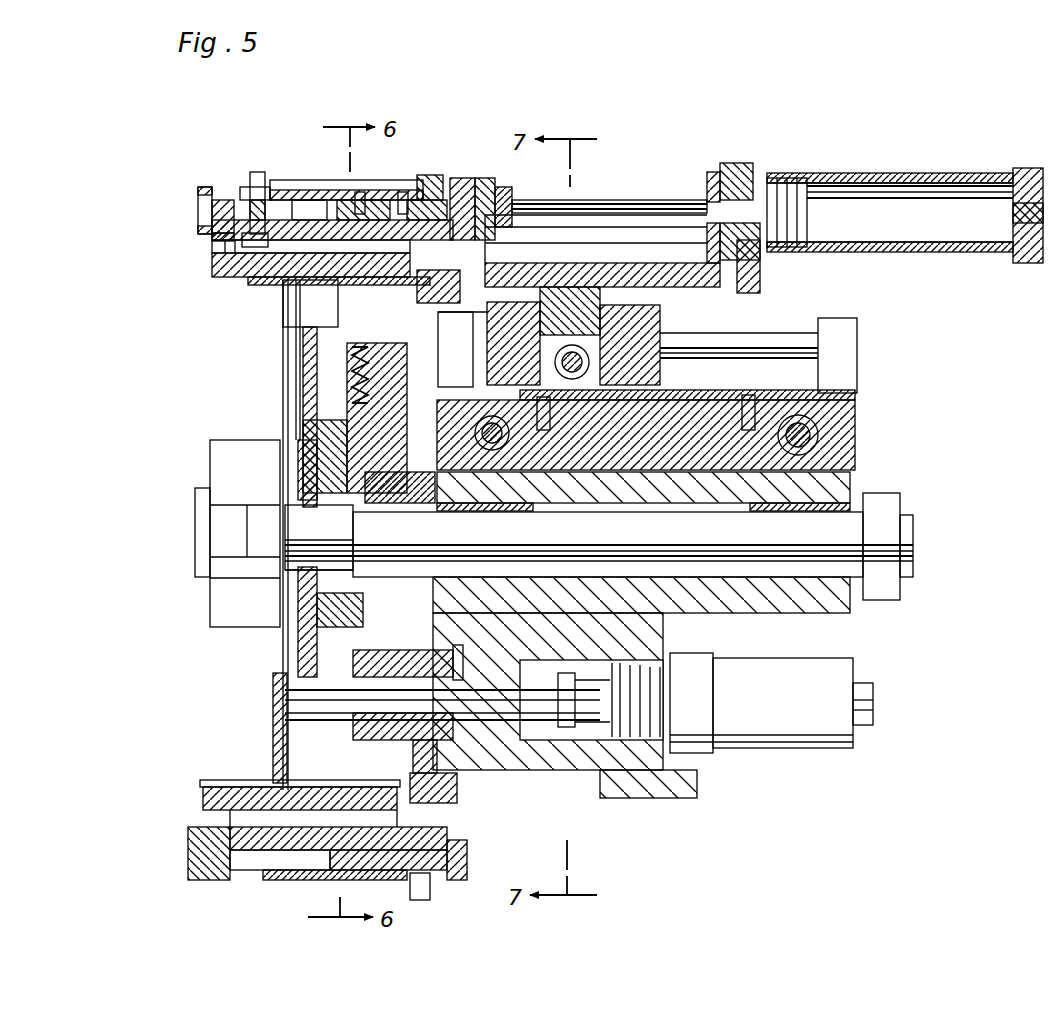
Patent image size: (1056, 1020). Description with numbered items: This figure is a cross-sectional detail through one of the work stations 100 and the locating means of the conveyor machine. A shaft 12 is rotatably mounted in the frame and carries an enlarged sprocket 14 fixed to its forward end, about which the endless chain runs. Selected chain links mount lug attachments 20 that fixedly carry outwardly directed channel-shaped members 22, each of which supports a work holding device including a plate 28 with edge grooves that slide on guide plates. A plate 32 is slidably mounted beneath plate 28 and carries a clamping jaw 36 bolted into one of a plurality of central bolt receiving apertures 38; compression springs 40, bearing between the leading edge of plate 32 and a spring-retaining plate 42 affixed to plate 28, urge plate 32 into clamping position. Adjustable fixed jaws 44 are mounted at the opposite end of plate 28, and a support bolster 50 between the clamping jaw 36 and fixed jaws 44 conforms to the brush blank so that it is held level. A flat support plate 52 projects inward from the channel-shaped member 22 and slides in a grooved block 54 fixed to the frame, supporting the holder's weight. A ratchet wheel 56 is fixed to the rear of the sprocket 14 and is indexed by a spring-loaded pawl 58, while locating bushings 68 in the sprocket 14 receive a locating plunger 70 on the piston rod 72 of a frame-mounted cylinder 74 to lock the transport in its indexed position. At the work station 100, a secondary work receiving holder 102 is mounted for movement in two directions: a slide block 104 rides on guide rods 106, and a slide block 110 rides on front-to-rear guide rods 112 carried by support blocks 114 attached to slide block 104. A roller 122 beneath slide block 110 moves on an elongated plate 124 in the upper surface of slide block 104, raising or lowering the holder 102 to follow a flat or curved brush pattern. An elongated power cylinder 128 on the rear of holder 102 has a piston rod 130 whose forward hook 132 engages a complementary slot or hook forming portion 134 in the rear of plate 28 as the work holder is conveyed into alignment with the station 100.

The shaft 12 is at (843, 498).
The sprocket 14 is at (305, 615).
The lug attachment 20 is at (300, 284).
The channel-shaped member 22 is at (248, 262).
The plate 28 is at (213, 212).
The plate 32 is at (226, 245).
The clamping jaw 36 is at (256, 173).
The bolt receiving apertures 38 is at (326, 215).
The compression springs 40 is at (212, 236).
The spring-retaining plate 42 is at (200, 196).
The fixed jaws 44 is at (436, 177).
The support bolster 50 is at (322, 186).
The flat support plate 52 is at (372, 285).
The grooved block 54 is at (430, 306).
The ratchet wheel 56 is at (325, 452).
The spring-loaded pawl 58 is at (340, 433).
The locating bushings 68 is at (290, 705).
The locating plunger 70 is at (383, 718).
The piston rod 72 is at (590, 723).
The cylinder 74 is at (760, 735).
The work station 100 is at (705, 112).
The secondary work receiving holder 102 is at (720, 290).
The slide block 104 is at (843, 402).
The guide rods 106 is at (812, 436).
The slide block 110 is at (660, 370).
The guide rods 112 is at (775, 333).
The support blocks 114 is at (840, 322).
The roller 122 is at (573, 382).
The elongated plate 124 is at (640, 400).
The power cylinder 128 is at (900, 172).
The piston rod 130 is at (618, 202).
The slotted block or hook 132 is at (465, 176).
The slot or hook forming portion 134 is at (512, 195).